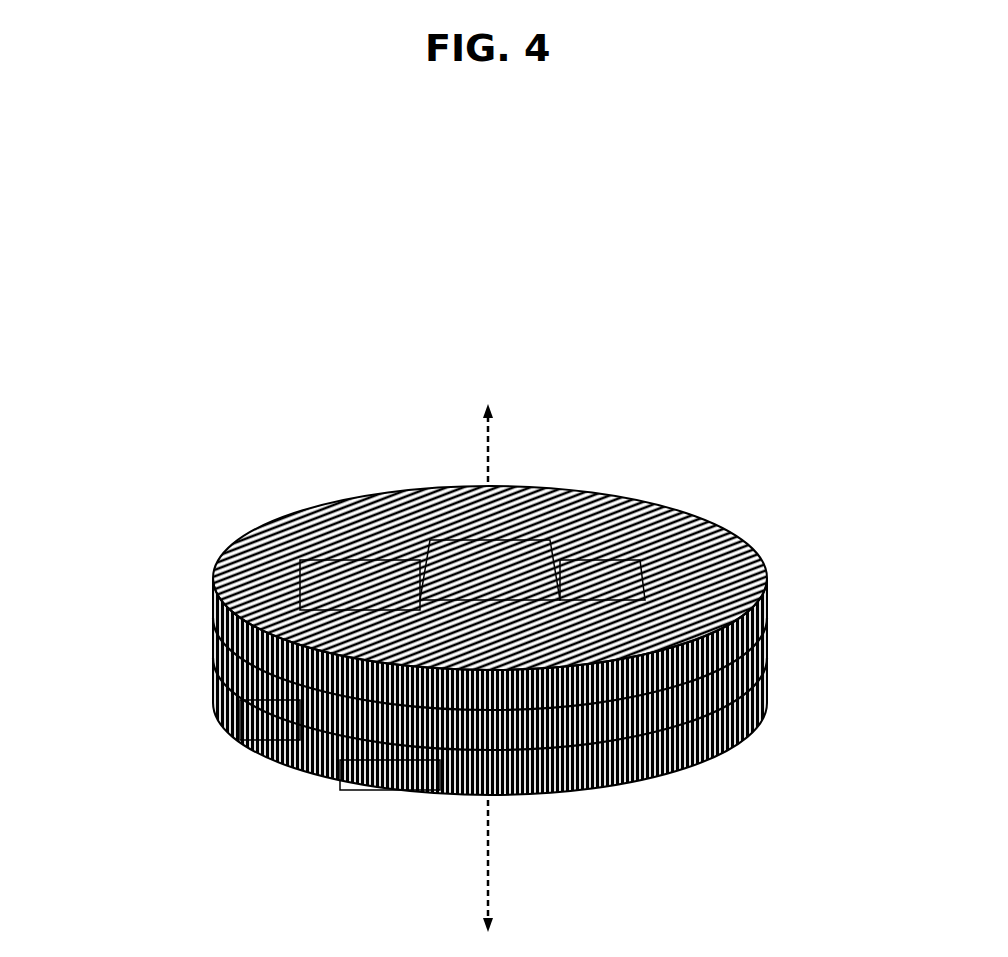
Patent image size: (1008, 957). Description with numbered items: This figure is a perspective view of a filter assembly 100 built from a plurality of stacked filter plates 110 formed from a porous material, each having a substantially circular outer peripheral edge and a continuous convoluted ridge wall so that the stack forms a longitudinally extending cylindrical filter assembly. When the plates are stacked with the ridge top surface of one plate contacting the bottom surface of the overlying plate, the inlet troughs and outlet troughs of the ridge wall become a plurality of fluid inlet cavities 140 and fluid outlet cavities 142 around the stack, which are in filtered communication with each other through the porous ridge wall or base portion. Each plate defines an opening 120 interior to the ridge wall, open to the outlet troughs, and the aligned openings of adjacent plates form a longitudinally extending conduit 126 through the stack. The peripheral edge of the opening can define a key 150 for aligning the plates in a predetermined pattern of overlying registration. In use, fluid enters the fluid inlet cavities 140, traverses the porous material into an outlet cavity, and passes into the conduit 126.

The filter assembly 100 is at (226, 433).
The filter plate 110 is at (768, 615).
The opening 120 is at (560, 540).
The fluid outlet cavity 142 is at (610, 585).
The key 150 is at (330, 590).
The longitudinally extending conduit 126 is at (248, 735).
The fluid inlet cavity 140 is at (380, 790).